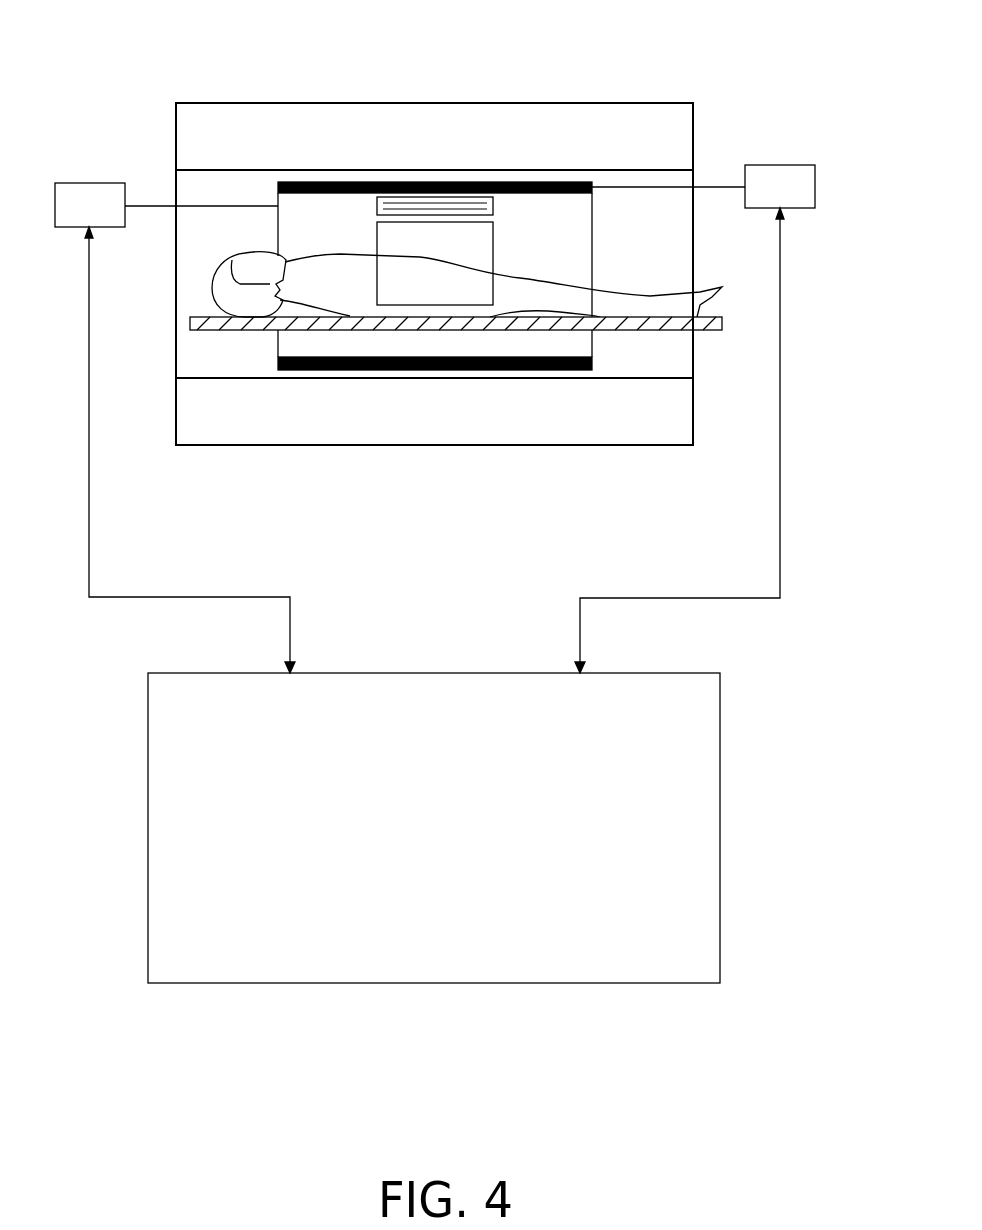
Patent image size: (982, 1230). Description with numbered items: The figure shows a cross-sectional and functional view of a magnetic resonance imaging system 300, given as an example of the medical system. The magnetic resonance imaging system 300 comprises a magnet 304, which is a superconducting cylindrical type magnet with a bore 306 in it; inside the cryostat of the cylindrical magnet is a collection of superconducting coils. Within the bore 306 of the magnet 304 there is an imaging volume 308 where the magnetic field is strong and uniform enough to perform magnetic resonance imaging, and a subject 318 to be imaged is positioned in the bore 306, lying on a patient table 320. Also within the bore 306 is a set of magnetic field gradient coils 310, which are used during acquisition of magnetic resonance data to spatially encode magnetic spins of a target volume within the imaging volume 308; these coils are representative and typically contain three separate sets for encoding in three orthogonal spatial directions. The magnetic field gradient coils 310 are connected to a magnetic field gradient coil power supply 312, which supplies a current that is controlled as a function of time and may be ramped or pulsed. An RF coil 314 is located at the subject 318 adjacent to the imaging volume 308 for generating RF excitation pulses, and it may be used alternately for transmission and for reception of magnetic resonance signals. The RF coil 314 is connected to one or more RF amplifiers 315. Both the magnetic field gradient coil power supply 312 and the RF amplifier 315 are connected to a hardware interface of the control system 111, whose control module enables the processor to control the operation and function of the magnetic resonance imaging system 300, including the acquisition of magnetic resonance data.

The magnetic resonance imaging system 300 is at (660, 79).
The magnet 304 is at (693, 128).
The bore 306 is at (625, 233).
The imaging volume 308 is at (493, 235).
The magnetic field gradient coils 310 is at (331, 181).
The magnetic field gradient coil power supply 312 is at (695, 419).
The RF coil 314 is at (493, 207).
The RF amplifier 315 is at (175, 428).
The subject 318 is at (214, 276).
The patient table 320 is at (216, 331).
The control system 111 is at (430, 672).